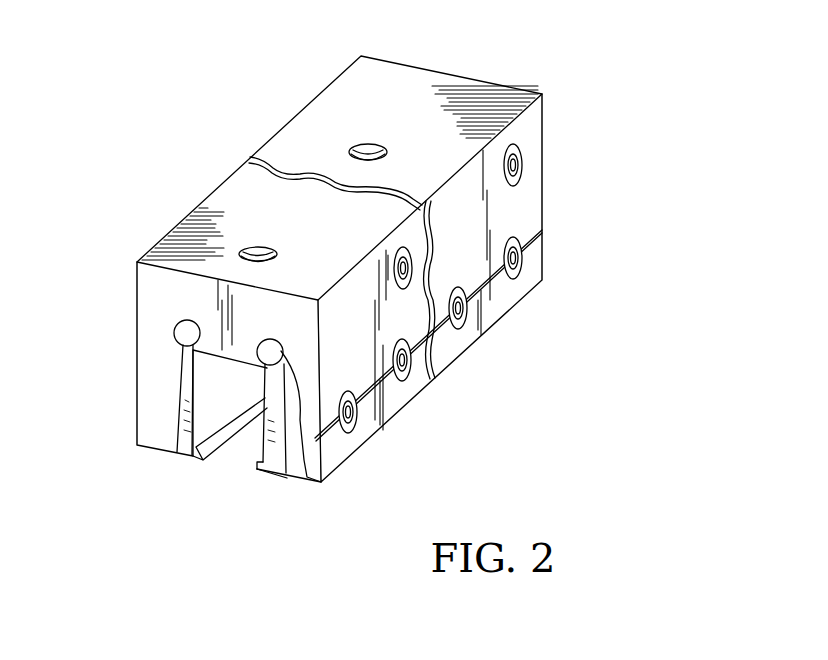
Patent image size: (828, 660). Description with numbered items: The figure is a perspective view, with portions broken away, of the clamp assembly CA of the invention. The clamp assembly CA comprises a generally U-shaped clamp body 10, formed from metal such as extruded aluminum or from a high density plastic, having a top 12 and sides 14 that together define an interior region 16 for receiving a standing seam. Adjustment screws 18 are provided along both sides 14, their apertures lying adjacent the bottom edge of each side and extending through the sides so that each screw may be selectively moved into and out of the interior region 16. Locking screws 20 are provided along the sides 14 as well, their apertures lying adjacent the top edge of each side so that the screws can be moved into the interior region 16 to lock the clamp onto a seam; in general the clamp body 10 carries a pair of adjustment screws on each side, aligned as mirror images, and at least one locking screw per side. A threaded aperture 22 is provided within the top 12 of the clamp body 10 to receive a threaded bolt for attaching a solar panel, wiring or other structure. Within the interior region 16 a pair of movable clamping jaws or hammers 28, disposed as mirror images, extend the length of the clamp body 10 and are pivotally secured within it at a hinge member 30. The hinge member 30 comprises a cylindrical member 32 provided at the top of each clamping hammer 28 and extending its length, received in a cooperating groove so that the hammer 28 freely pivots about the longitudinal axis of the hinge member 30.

The clamp body 10 is at (497, 84).
The top 12 is at (413, 85).
The sides 14 is at (138, 314).
The interior region 16 is at (237, 442).
The adjustment screws 18 is at (535, 281).
The locking screws 20 is at (522, 166).
The threaded aperture 22 is at (255, 247).
The clamping hammers 28 is at (182, 442).
The hinge member 30 is at (173, 336).
The cylindrical member 32 is at (307, 479).
The clamp assembly CA is at (563, 128).